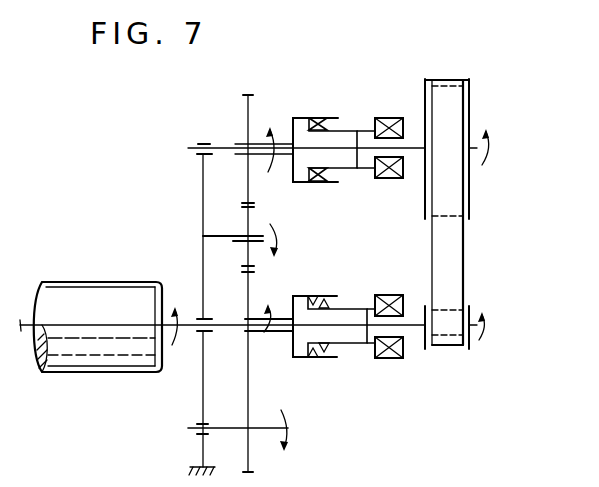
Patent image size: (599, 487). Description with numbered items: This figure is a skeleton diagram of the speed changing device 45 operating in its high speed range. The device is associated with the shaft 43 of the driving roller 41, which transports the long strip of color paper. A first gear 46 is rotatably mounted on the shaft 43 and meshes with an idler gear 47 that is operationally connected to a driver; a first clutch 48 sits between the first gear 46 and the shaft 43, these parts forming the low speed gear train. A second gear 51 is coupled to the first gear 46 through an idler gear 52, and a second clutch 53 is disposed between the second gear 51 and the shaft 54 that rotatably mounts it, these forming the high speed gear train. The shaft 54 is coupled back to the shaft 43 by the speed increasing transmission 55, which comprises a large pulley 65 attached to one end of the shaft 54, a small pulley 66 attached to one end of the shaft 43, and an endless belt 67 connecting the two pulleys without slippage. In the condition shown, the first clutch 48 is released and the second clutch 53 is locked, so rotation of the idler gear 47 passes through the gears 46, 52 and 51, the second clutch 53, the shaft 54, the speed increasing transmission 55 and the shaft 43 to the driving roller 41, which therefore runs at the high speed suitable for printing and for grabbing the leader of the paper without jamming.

The driving roller 41 is at (88, 282).
The shaft 43 is at (186, 330).
The speed changing device 45 is at (346, 106).
The first gear 46 is at (268, 363).
The idler gear 47 is at (252, 461).
The first clutch 48 is at (305, 288).
The second gear 51 is at (248, 117).
The idler gear 52 is at (250, 216).
The second clutch 53 is at (327, 108).
The shaft 54 is at (222, 147).
The speed increasing transmission 55 is at (491, 227).
The large pulley 65 is at (470, 107).
The small pulley 66 is at (470, 343).
The endless belt 67 is at (460, 267).